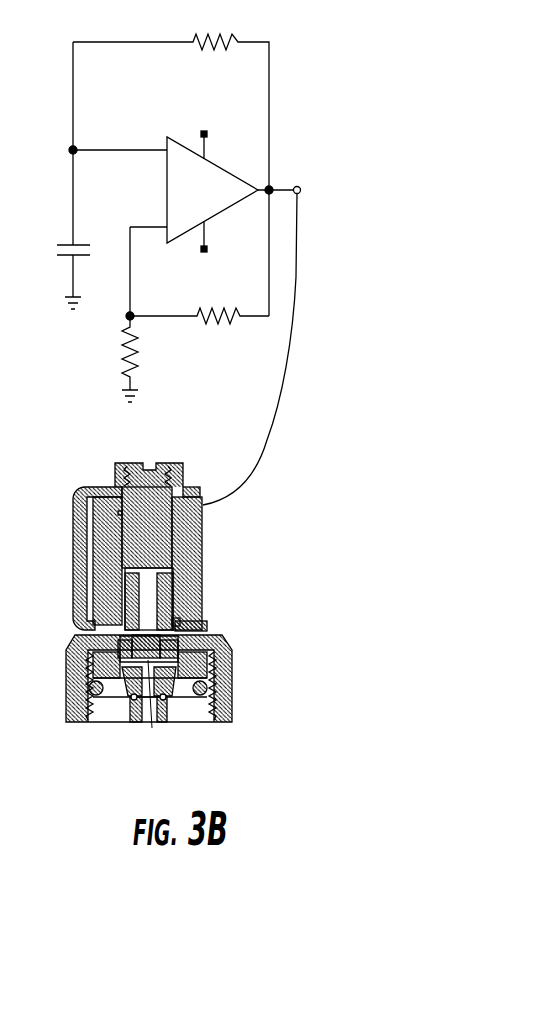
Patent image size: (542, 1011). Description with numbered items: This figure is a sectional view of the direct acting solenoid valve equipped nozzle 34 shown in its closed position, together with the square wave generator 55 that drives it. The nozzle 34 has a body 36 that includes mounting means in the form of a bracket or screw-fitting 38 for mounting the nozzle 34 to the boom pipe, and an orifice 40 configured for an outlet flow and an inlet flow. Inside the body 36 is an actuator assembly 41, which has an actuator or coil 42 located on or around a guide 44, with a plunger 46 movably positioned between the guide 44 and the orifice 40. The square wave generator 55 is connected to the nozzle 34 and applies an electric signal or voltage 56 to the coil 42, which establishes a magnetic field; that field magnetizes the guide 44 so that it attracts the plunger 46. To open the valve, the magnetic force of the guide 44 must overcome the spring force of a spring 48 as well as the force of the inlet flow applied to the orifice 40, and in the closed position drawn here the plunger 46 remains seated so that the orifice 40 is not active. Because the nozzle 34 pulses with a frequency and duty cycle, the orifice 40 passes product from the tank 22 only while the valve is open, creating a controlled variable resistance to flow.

The tank 22 is at (177, 692).
The nozzle 34 is at (58, 371).
The body 36 is at (68, 508).
The screw-fitting 38 is at (65, 688).
The orifice 40 is at (153, 727).
The actuator assembly 41 is at (186, 617).
The coil 42 is at (187, 525).
The guide 44 is at (152, 496).
The plunger 46 is at (163, 600).
The spring 48 is at (205, 653).
The square wave generator 55 is at (269, 147).
The voltage 56 is at (297, 277).